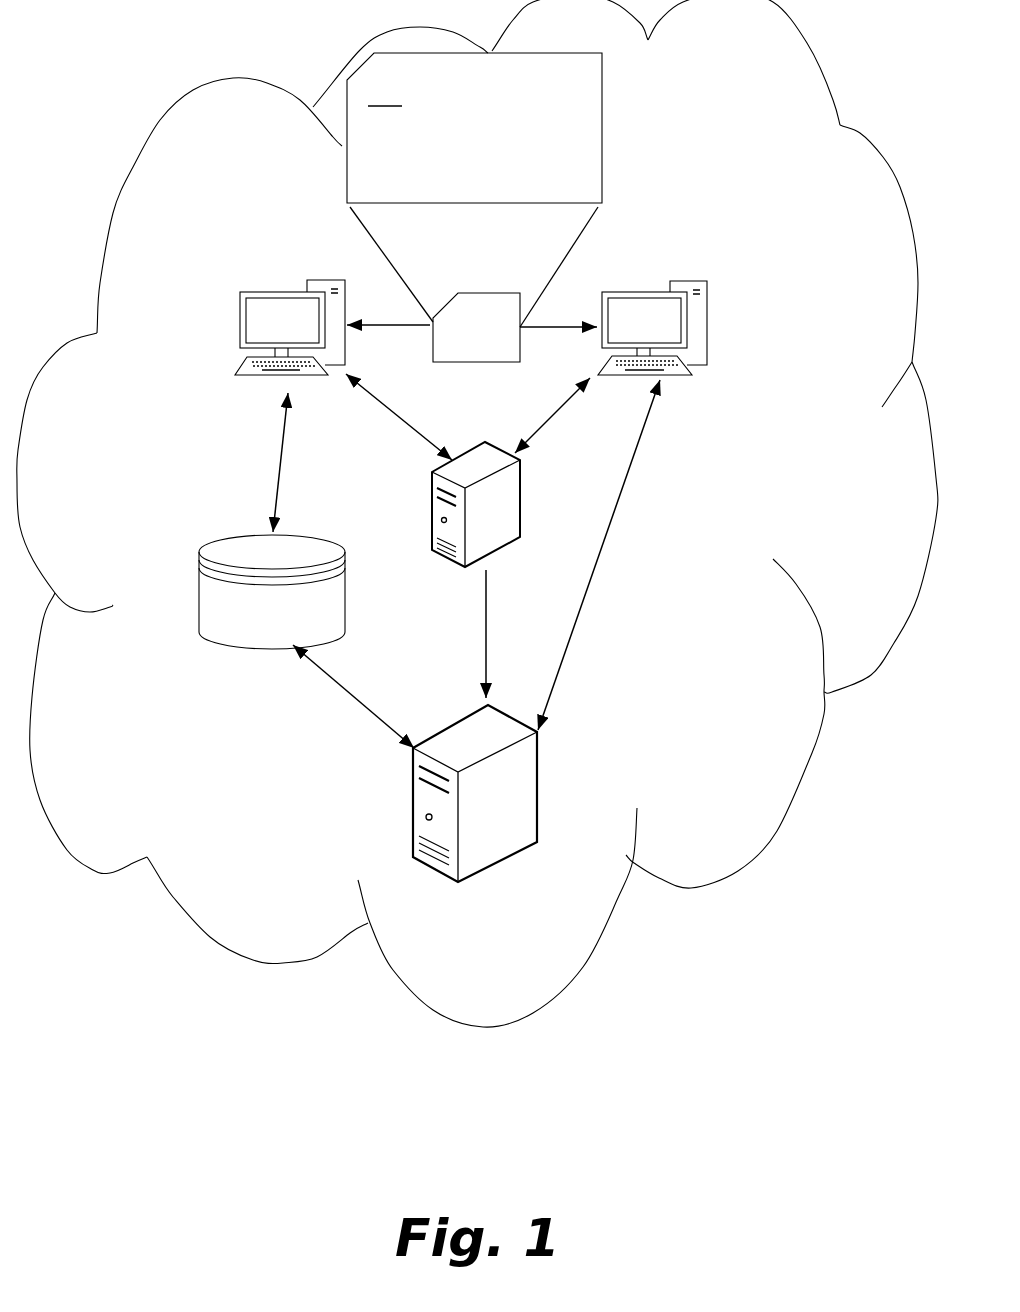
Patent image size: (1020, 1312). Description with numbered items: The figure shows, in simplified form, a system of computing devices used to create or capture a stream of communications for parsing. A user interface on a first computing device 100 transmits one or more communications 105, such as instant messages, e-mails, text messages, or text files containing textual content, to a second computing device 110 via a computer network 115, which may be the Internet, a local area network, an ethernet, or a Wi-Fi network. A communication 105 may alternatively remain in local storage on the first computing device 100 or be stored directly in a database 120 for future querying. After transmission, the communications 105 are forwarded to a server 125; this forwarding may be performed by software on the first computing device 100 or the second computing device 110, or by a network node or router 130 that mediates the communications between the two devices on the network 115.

The first computing device 100 is at (290, 300).
The communications 105 is at (494, 338).
The second computing device 110 is at (709, 297).
The computer network 115 is at (128, 803).
The database 120 is at (292, 640).
The server 125 is at (539, 793).
The network node or router 130 is at (430, 528).